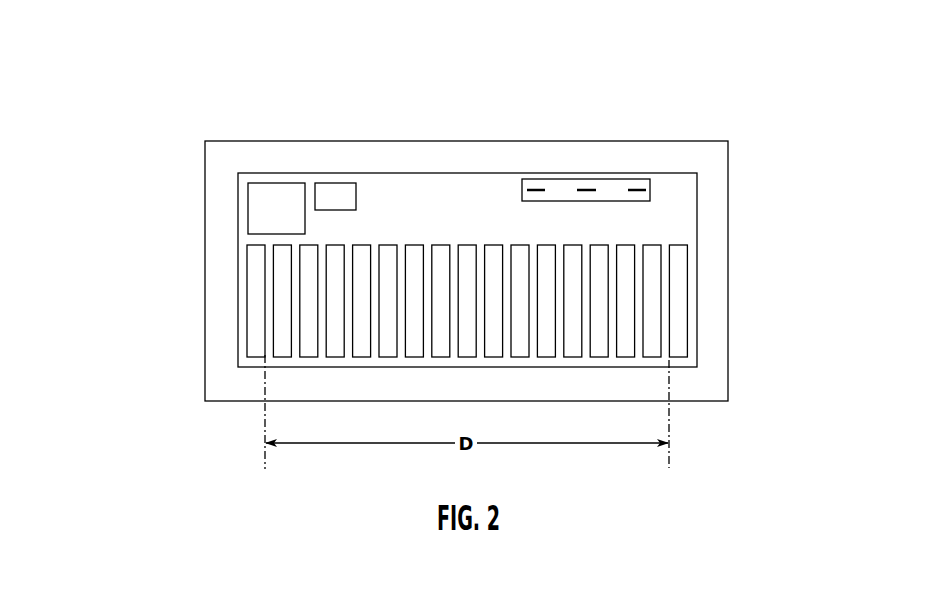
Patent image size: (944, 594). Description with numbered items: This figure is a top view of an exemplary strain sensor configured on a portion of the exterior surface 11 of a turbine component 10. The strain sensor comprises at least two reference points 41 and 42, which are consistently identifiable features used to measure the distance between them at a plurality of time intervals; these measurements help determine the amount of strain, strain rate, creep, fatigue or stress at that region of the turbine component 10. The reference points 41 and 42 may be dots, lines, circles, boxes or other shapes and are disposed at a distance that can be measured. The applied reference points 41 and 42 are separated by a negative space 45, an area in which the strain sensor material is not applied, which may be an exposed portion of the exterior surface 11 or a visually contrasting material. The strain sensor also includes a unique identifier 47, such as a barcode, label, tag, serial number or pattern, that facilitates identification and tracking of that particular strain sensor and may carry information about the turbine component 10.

The turbine component 10 is at (132, 169).
The exterior surface 11 is at (440, 158).
The first reference point 41 is at (247, 358).
The second reference point 42 is at (687, 358).
The negative space 45 is at (273, 269).
The unique identifier 47 is at (608, 177).